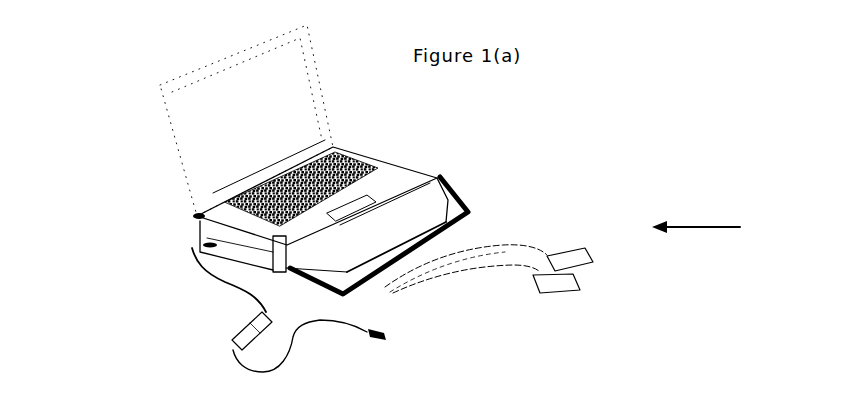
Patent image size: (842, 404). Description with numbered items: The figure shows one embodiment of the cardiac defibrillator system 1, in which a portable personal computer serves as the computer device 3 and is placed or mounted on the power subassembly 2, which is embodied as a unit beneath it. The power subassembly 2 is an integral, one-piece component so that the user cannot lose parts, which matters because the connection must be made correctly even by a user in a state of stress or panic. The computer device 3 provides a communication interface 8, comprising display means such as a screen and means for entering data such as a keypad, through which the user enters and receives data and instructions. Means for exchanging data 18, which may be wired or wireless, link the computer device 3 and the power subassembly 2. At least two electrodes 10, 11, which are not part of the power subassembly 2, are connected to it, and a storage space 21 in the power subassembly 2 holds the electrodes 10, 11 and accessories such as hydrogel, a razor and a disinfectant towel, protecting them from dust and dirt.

The cardiac defibrillator system 1 is at (706, 225).
The power subassembly 2 is at (208, 245).
The computer device 3 is at (377, 180).
The communication interface 8 is at (213, 116).
The electrode 10 is at (593, 270).
The electrode 11 is at (580, 296).
The means for exchanging data 18 is at (238, 291).
The storage space 21 is at (455, 202).